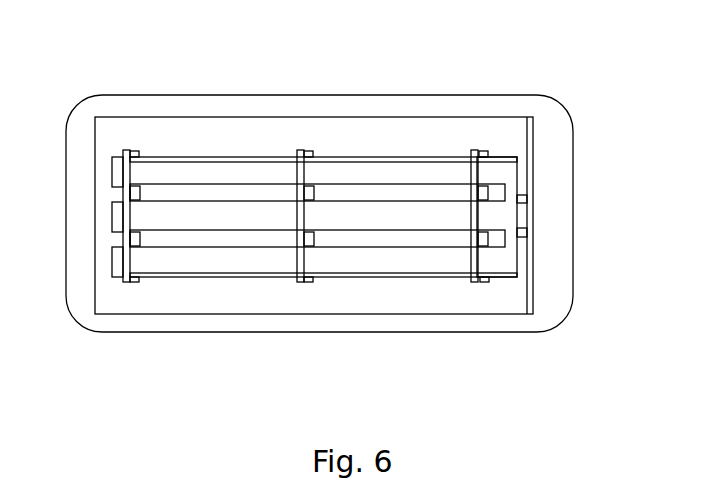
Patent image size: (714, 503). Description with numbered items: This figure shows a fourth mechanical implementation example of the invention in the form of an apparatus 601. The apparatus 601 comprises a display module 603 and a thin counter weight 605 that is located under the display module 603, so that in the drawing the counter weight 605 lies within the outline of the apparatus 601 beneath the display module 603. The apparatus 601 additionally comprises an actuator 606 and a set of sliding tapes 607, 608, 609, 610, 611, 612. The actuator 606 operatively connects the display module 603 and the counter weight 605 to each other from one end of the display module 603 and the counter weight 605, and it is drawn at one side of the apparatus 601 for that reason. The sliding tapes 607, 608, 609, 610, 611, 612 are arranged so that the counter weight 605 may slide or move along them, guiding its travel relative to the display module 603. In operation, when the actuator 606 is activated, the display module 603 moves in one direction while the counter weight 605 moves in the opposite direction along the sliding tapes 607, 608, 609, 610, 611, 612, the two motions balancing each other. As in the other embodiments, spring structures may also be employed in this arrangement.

The apparatus 601 is at (319, 264).
The display module 603 is at (309, 267).
The counter weight 605 is at (323, 287).
The actuator 606 is at (553, 255).
The sliding tape 607 is at (129, 147).
The sliding tape 608 is at (175, 88).
The sliding tape 609 is at (301, 147).
The sliding tape 610 is at (348, 89).
The sliding tape 611 is at (476, 147).
The sliding tape 612 is at (523, 89).